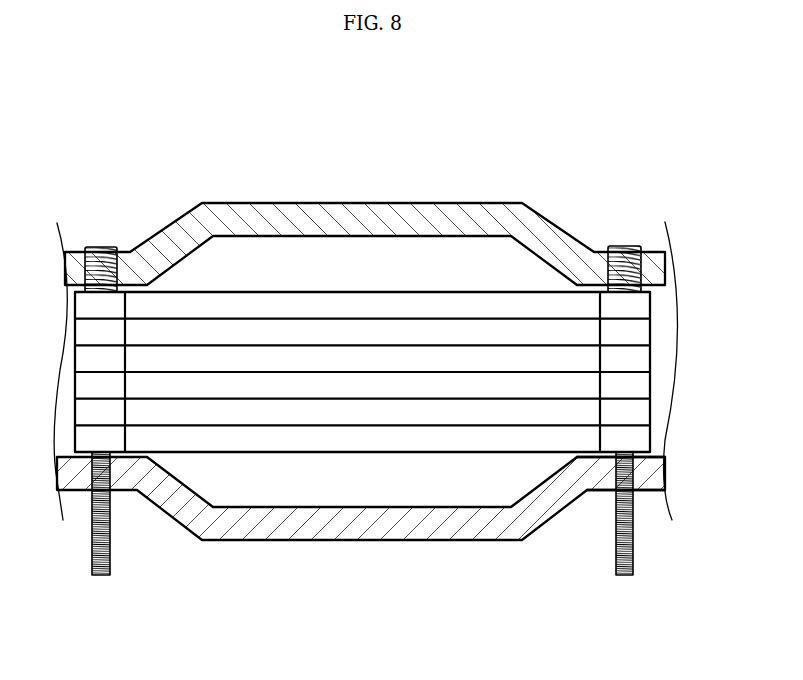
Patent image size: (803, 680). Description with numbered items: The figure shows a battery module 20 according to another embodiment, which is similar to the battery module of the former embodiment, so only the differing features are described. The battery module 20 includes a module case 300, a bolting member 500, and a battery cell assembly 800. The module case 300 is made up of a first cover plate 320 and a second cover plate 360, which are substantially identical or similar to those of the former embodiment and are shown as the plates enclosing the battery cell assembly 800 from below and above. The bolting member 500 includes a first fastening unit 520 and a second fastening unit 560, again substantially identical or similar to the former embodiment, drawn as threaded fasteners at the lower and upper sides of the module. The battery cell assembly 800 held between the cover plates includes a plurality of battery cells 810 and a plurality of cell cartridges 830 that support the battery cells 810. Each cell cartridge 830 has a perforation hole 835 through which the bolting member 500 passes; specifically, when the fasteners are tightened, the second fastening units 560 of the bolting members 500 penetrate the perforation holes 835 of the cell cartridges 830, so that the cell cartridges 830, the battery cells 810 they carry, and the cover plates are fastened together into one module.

The battery module 20 is at (170, 140).
The module case 300 is at (332, 556).
The first cover plate 320 is at (653, 476).
The second cover plate 360 is at (662, 271).
The bolting member 500 is at (98, 585).
The first fastening unit 520 is at (628, 539).
The second fastening unit 560 is at (623, 262).
The battery cell assembly 800 is at (363, 286).
The battery cell 810 is at (270, 305).
The cell cartridge 830 is at (88, 305).
The perforation hole 835 is at (120, 277).